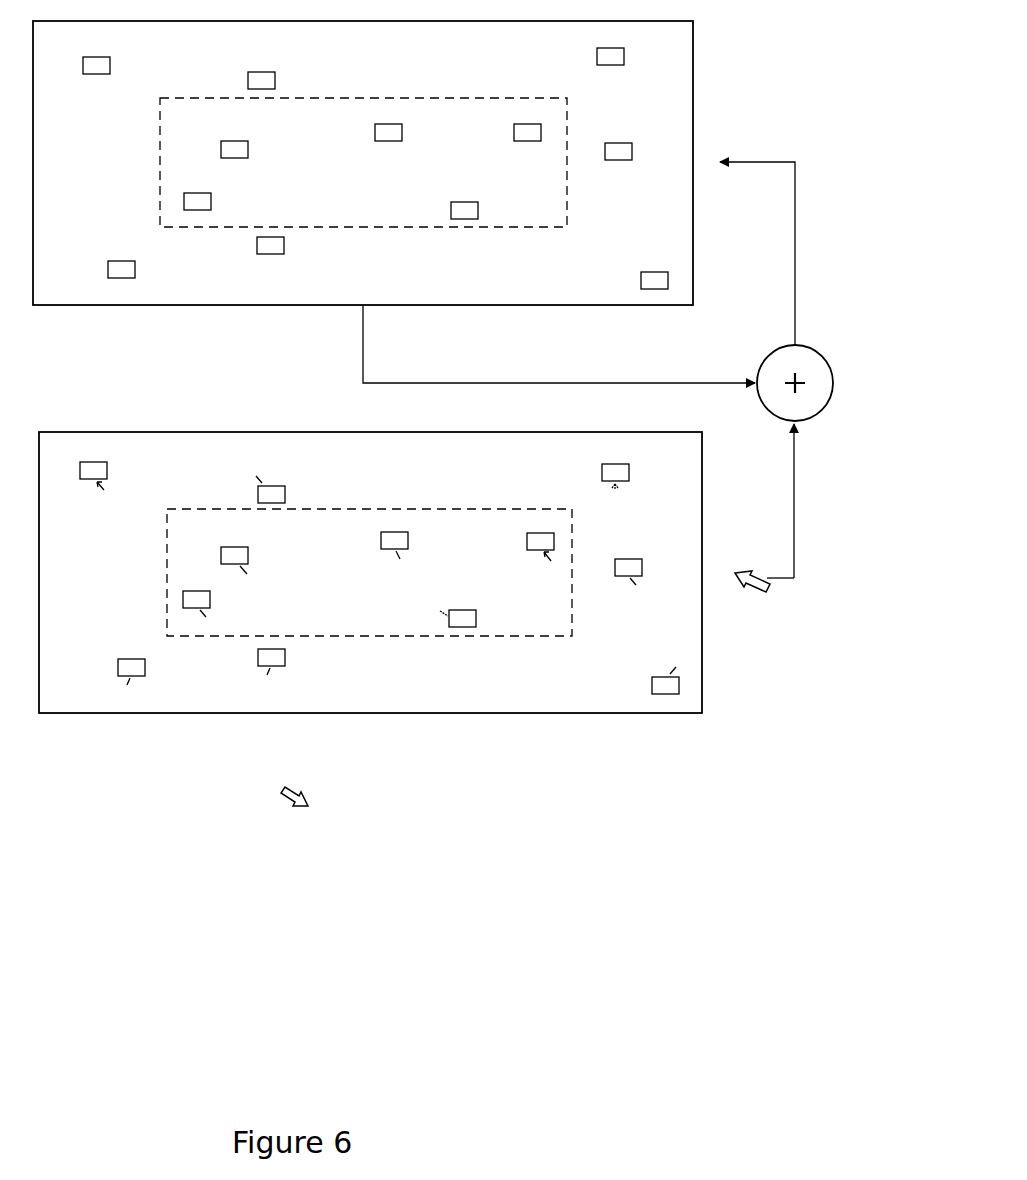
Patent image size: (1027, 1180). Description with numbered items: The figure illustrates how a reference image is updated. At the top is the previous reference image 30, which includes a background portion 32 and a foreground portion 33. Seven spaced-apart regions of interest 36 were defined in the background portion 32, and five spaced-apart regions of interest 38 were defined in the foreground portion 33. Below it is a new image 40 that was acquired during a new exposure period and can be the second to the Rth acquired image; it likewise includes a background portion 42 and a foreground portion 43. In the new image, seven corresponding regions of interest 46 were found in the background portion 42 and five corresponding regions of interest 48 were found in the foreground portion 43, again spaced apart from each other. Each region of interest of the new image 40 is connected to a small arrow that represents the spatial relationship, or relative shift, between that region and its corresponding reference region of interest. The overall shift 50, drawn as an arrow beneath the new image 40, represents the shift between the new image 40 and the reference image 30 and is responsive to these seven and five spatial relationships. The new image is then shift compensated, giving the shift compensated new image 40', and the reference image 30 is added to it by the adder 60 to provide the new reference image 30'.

The reference image 30 is at (363, 175).
The new reference image 30' is at (762, 136).
The background portion 32 is at (431, 299).
The foreground portion 33 is at (353, 211).
The reference regions of interest 36 is at (361, 159).
The reference regions of interest 38 is at (344, 167).
The new image 40 is at (370, 609).
The shift compensated new image 40' is at (772, 614).
The background portion 42 is at (436, 709).
The foreground portion 43 is at (361, 620).
The corresponding regions of interest 46 is at (369, 565).
The corresponding regions of interest 48 is at (346, 576).
The shift 50 is at (282, 818).
The adder 60 is at (833, 398).